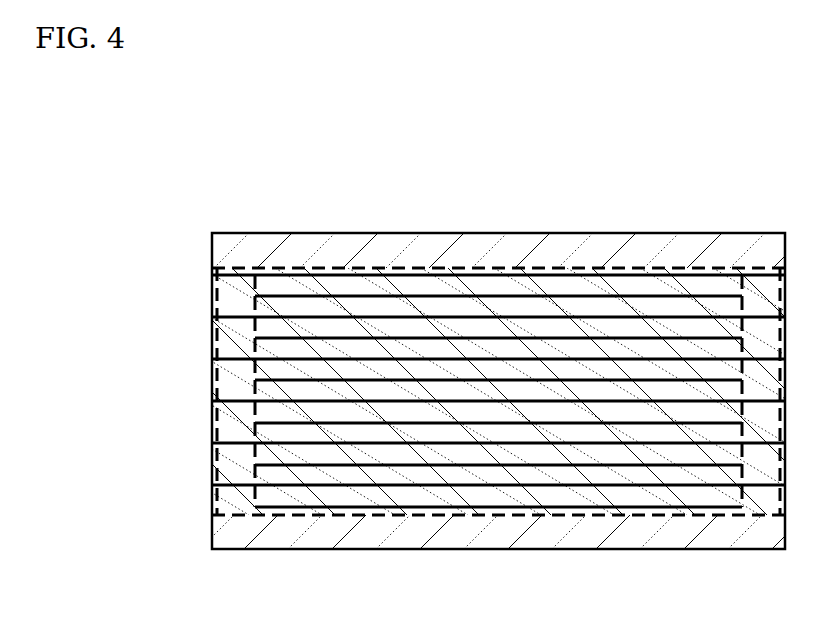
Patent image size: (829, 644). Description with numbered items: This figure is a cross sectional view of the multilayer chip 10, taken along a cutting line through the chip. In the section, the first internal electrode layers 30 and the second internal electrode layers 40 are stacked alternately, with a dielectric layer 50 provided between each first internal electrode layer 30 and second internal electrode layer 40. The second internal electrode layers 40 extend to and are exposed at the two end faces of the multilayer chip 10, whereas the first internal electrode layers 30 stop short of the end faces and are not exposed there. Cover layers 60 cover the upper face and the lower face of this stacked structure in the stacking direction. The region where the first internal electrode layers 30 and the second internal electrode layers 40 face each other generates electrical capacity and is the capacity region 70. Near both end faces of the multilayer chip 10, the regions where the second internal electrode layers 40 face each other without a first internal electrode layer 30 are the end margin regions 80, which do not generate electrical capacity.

The multilayer chip 10 is at (645, 190).
The first internal electrode layer 30 is at (293, 294).
The second internal electrode layer 40 is at (357, 316).
The dielectric layer 50 is at (410, 470).
The cover layer 60 is at (698, 253).
The capacity region 70 is at (421, 268).
The end margin region 80 is at (240, 257).